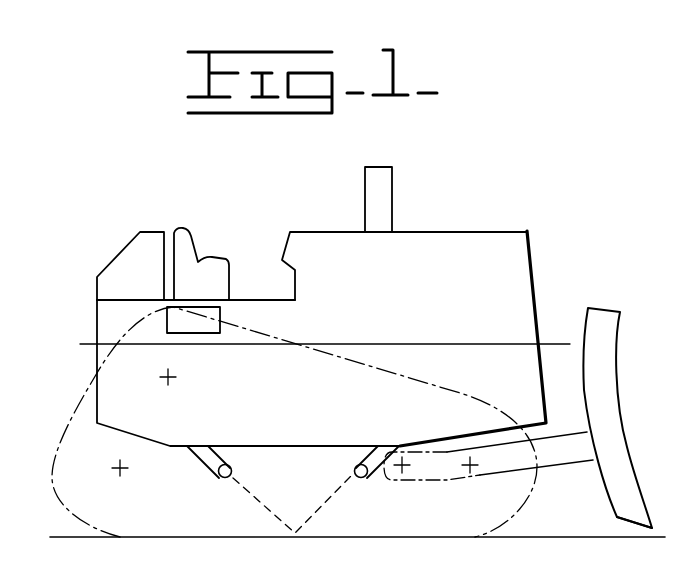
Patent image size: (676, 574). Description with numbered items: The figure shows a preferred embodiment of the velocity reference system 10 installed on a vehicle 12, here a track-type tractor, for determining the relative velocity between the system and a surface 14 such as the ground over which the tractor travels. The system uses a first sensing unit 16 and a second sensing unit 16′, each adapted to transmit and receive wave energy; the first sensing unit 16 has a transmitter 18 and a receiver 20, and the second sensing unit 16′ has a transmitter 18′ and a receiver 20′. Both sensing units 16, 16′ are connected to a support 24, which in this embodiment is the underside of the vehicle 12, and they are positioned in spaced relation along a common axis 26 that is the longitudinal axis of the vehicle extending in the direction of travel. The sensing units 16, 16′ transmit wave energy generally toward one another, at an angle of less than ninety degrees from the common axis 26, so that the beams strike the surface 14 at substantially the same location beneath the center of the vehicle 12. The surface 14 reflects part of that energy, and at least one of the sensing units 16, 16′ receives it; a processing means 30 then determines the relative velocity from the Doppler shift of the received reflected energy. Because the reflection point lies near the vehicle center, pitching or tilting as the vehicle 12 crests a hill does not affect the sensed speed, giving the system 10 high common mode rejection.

The velocity reference system 10 is at (166, 184).
The vehicle 12 is at (487, 229).
The surface 14 is at (547, 530).
The first sensing unit 16 is at (196, 462).
The second sensing unit 16′ is at (396, 457).
The transmitter 18 is at (216, 474).
The transmitter 18′ is at (371, 478).
The receiver 20 is at (228, 452).
The receiver 20′ is at (362, 449).
The support 24 is at (293, 447).
The common axis 26 is at (428, 343).
The processing means 30 is at (215, 318).